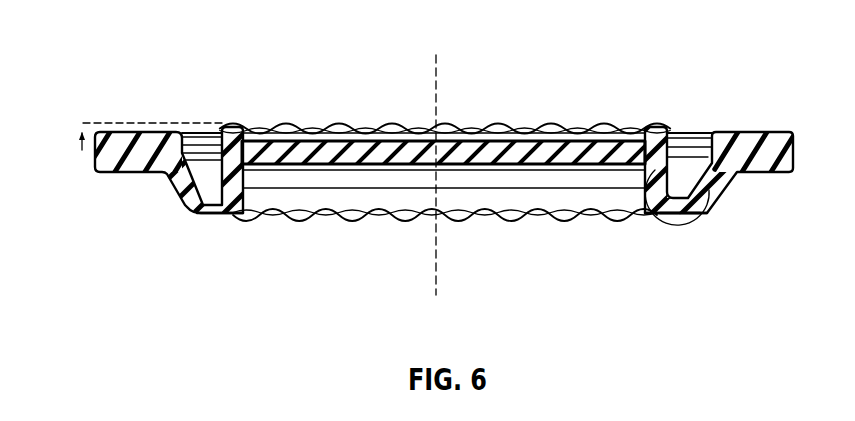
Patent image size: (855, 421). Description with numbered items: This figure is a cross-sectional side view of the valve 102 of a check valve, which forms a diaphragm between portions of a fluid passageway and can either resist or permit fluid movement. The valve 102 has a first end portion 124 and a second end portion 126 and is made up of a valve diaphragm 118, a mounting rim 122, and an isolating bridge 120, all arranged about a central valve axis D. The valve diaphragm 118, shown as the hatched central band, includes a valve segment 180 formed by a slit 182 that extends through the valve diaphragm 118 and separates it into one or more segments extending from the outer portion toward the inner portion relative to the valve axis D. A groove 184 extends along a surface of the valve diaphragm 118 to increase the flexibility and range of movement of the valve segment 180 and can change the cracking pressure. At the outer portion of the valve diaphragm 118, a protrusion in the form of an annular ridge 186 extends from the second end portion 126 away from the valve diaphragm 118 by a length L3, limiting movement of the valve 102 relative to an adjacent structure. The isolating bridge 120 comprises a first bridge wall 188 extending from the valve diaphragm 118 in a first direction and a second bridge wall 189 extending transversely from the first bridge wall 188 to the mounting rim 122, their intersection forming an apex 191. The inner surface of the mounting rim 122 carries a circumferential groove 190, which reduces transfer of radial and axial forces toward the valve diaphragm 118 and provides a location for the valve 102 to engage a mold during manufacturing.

The valve 102 is at (94, 47).
The valve diaphragm 118 is at (262, 220).
The isolating bridge 120 is at (198, 213).
The mounting rim 122 is at (166, 178).
The first end portion 124 is at (444, 240).
The second end portion 126 is at (445, 82).
The valve segment 180 is at (363, 150).
The slit 182 is at (454, 129).
The groove 184 is at (636, 127).
The annular ridge 186 is at (680, 151).
The first bridge wall 188 is at (684, 213).
The second bridge wall 189 is at (652, 218).
The circumferential groove 190 is at (709, 190).
The apex 191 is at (695, 279).
The length L3 is at (138, 105).
The central valve axis D is at (437, 268).